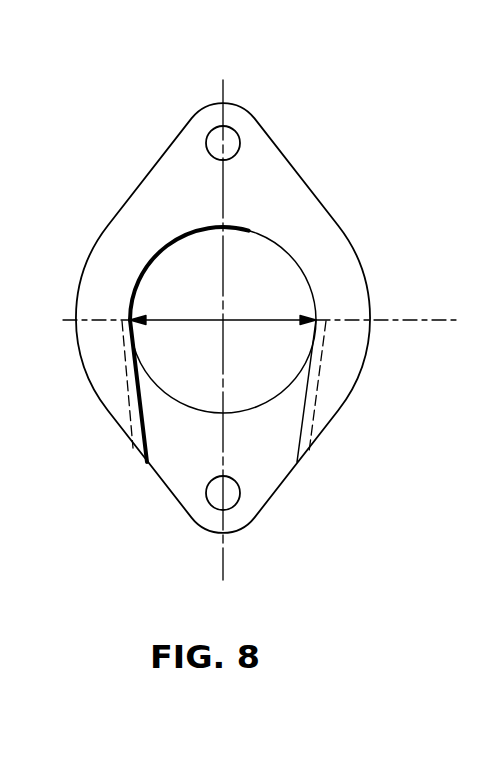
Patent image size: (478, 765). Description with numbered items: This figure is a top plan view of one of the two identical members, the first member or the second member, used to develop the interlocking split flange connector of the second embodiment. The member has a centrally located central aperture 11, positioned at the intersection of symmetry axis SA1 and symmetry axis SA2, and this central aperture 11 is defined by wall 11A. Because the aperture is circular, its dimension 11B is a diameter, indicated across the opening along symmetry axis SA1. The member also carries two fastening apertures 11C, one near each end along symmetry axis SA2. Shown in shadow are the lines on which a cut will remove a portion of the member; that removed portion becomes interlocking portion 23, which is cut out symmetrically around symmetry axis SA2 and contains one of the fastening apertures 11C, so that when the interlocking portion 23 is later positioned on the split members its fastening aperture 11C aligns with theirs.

The central aperture 11 is at (203, 285).
The wall 11A is at (280, 252).
The dimension 11B is at (232, 316).
The fastening aperture 11C is at (212, 130).
The interlocking portion 23 is at (178, 473).
The symmetry axis SA1 is at (442, 318).
The symmetry axis SA2 is at (218, 572).